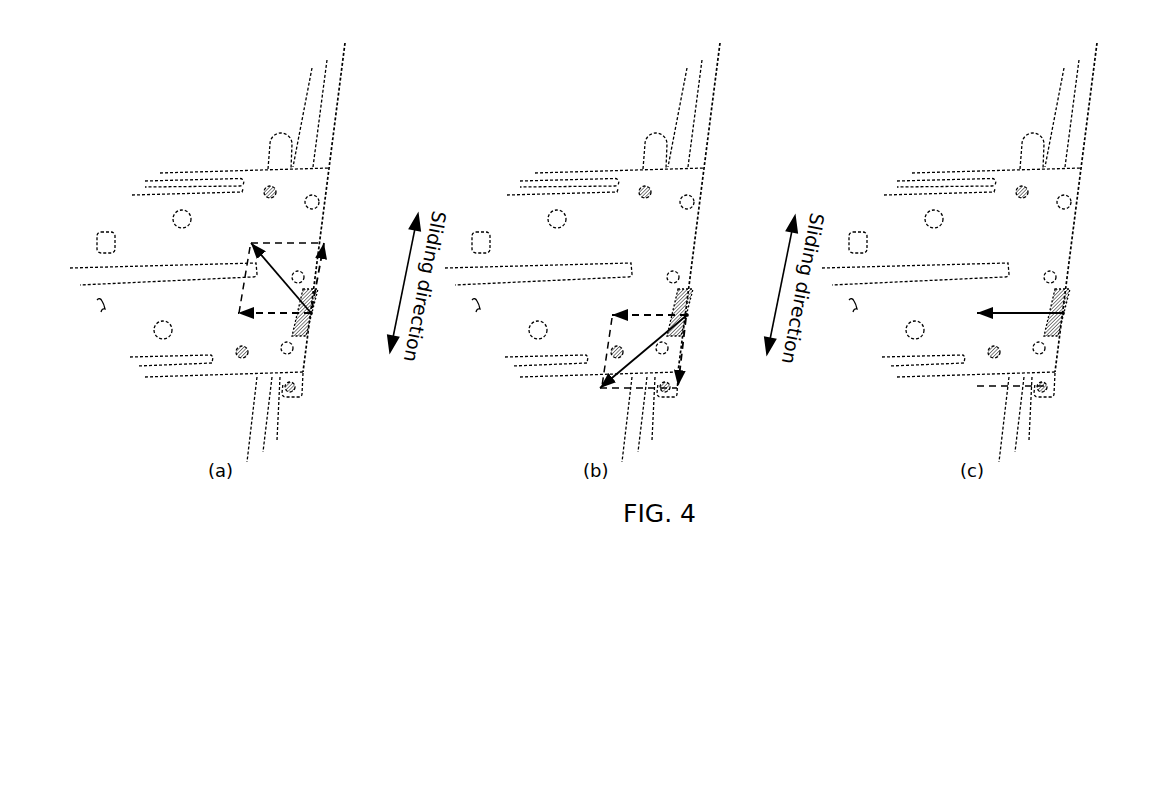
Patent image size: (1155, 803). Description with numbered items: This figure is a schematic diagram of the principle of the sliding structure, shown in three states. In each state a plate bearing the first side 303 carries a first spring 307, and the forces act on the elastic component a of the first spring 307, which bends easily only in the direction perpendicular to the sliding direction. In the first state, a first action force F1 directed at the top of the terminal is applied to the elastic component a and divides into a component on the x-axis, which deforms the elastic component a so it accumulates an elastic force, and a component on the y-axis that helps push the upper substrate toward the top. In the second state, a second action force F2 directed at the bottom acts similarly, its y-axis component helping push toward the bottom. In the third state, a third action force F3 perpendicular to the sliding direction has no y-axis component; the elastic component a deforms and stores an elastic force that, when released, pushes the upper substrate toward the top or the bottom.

The first side 303 is at (320, 228).
The first spring 307 is at (327, 324).
The elastic component a is at (313, 313).
The first action force F1 is at (297, 283).
The second action force F2 is at (849, 351).
The third action force F3 is at (1015, 299).